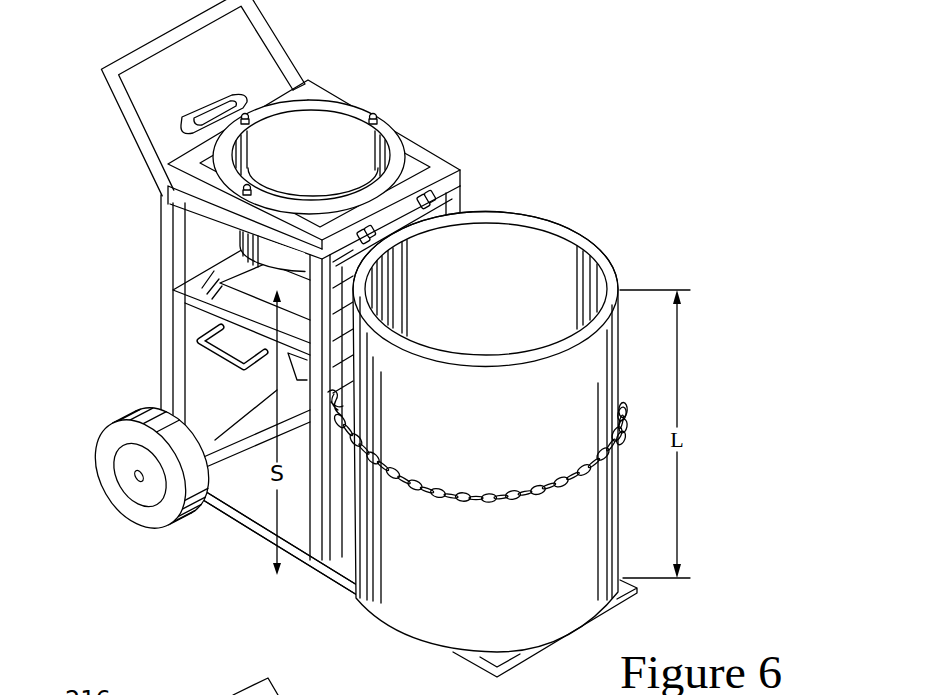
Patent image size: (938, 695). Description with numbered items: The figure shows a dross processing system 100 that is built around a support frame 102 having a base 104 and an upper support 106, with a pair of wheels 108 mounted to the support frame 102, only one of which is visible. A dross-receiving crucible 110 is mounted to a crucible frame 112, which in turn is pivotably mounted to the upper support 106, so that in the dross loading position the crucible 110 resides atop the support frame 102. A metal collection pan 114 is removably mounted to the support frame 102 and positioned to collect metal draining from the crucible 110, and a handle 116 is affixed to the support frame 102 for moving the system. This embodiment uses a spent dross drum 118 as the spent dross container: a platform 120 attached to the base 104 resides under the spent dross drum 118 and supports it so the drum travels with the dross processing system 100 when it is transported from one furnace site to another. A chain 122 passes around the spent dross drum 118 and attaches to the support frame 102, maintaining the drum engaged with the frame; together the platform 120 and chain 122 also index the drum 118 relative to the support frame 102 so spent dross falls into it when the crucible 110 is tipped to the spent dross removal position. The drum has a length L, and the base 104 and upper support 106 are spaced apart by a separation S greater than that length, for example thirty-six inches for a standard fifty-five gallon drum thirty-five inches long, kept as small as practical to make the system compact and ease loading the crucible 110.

The dross processing system 100 is at (447, 98).
The support frame 102 is at (157, 292).
The base 104 is at (240, 520).
The upper support 106 is at (212, 200).
The wheels 108 is at (150, 517).
The dross-receiving crucible 110 is at (337, 118).
The crucible frame 112 is at (430, 157).
The metal collection pan 114 is at (227, 370).
The handle 116 is at (147, 53).
The spent dross drum 118 is at (560, 257).
The platform 120 is at (338, 580).
The chain 122 is at (473, 502).